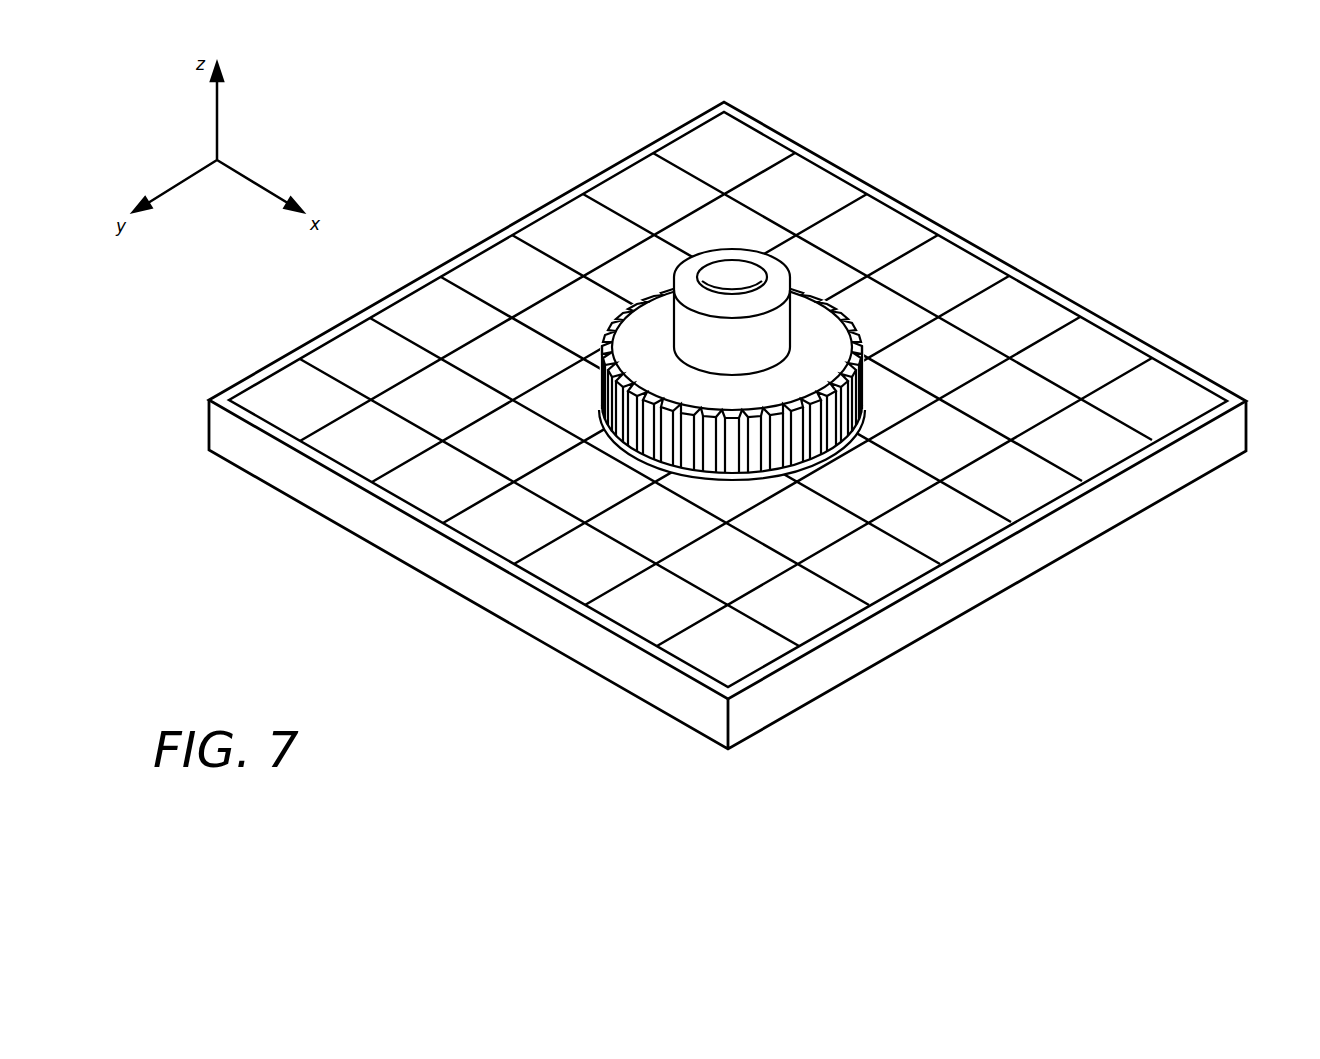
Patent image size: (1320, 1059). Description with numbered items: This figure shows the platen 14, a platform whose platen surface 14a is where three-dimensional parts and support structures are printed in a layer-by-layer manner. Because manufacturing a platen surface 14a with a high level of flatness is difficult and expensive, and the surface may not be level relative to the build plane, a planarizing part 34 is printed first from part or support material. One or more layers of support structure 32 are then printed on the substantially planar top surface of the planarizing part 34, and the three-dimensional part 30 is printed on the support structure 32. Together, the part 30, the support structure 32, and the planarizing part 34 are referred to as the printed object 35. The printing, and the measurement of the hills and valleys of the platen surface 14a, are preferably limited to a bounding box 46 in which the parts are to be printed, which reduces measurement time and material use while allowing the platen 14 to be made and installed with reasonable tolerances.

The platen 14 is at (1190, 622).
The platen surface 14a is at (1012, 308).
The 3D part 30 is at (779, 390).
The support structure 32 is at (872, 392).
The planarizing part 34 is at (740, 486).
The printed object 35 is at (585, 151).
The bounding box 46 is at (862, 428).